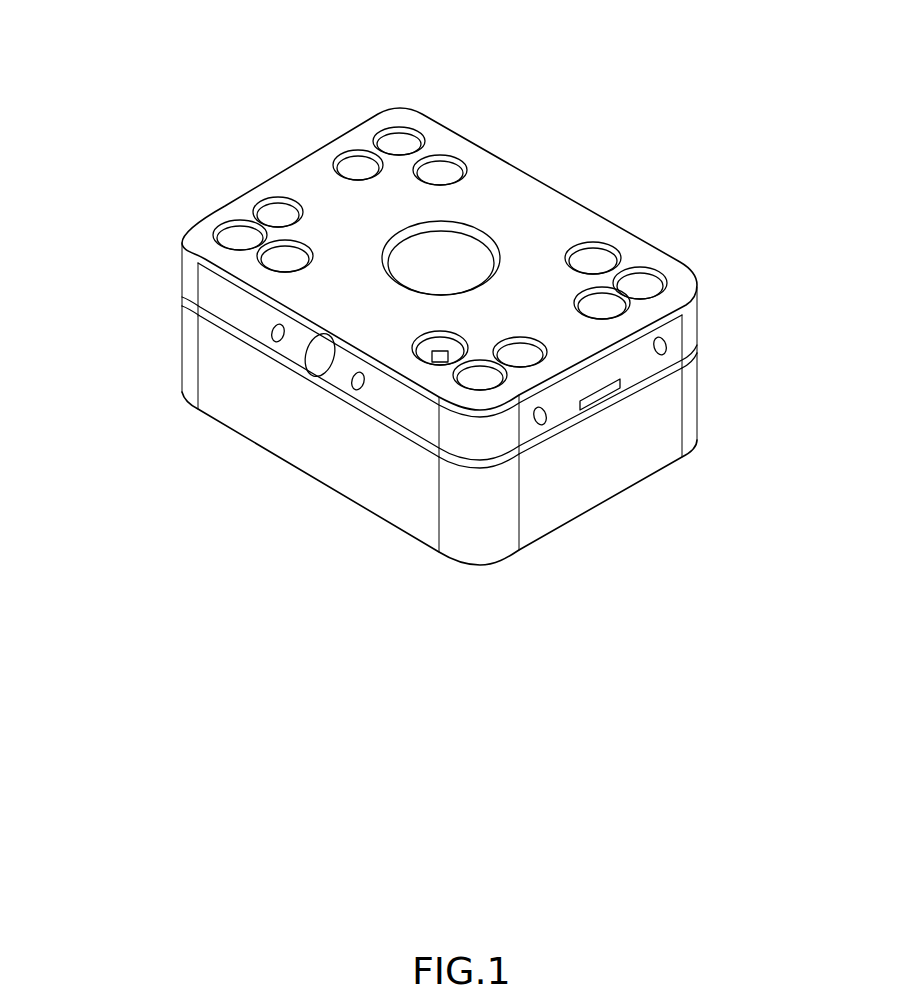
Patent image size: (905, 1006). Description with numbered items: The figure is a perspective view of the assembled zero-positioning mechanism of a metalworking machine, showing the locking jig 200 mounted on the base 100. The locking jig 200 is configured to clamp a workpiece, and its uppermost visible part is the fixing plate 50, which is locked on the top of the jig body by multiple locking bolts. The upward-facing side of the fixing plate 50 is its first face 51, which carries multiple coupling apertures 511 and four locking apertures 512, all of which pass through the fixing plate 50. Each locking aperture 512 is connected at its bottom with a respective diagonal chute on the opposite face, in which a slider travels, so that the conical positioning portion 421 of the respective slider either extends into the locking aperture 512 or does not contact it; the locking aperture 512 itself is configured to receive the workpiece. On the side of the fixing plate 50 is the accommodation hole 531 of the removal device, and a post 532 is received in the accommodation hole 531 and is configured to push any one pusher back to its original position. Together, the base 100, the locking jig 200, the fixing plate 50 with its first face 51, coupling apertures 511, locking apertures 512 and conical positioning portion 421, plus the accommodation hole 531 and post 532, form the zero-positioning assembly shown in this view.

The locking jig 200 is at (227, 155).
The base 100 is at (601, 505).
The fixing plate 50 is at (680, 262).
The first face 51 is at (525, 197).
The coupling apertures 511 is at (400, 143).
The locking apertures 512 is at (450, 177).
The conical positioning portion 421 is at (436, 355).
The accommodation hole 531 is at (327, 363).
The post 532 is at (312, 370).